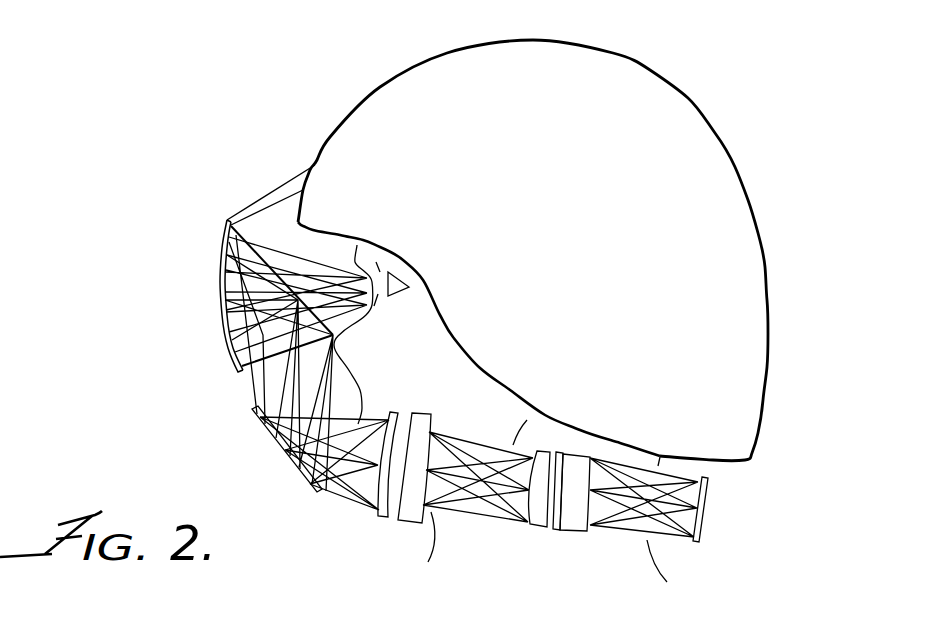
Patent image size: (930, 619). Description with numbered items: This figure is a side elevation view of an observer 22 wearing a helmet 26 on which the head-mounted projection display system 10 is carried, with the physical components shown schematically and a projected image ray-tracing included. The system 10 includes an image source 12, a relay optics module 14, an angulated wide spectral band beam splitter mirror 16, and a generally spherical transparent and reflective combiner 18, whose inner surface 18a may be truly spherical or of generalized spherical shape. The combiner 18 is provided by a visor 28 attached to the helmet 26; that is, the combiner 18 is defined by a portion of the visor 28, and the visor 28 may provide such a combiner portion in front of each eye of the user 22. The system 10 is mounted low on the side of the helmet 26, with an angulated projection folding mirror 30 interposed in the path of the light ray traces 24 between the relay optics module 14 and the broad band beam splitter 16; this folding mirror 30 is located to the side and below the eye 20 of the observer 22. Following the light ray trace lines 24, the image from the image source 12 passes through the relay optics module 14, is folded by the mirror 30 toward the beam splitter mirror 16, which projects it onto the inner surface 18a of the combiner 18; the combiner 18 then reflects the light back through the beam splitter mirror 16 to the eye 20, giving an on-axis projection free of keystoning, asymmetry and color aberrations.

The projection display system 10 is at (330, 507).
The image source 12 is at (707, 500).
The relay optics module 14 is at (480, 423).
The wide spectral band beam splitter mirror 16 is at (244, 231).
The combiner 18 is at (217, 292).
The inner surface 18a is at (228, 327).
The eye 20 is at (380, 264).
The observer 22 is at (430, 357).
The light ray trace lines 24 is at (461, 508).
The helmet 26 is at (682, 94).
The visor 28 is at (213, 249).
The projection folding mirror 30 is at (253, 410).